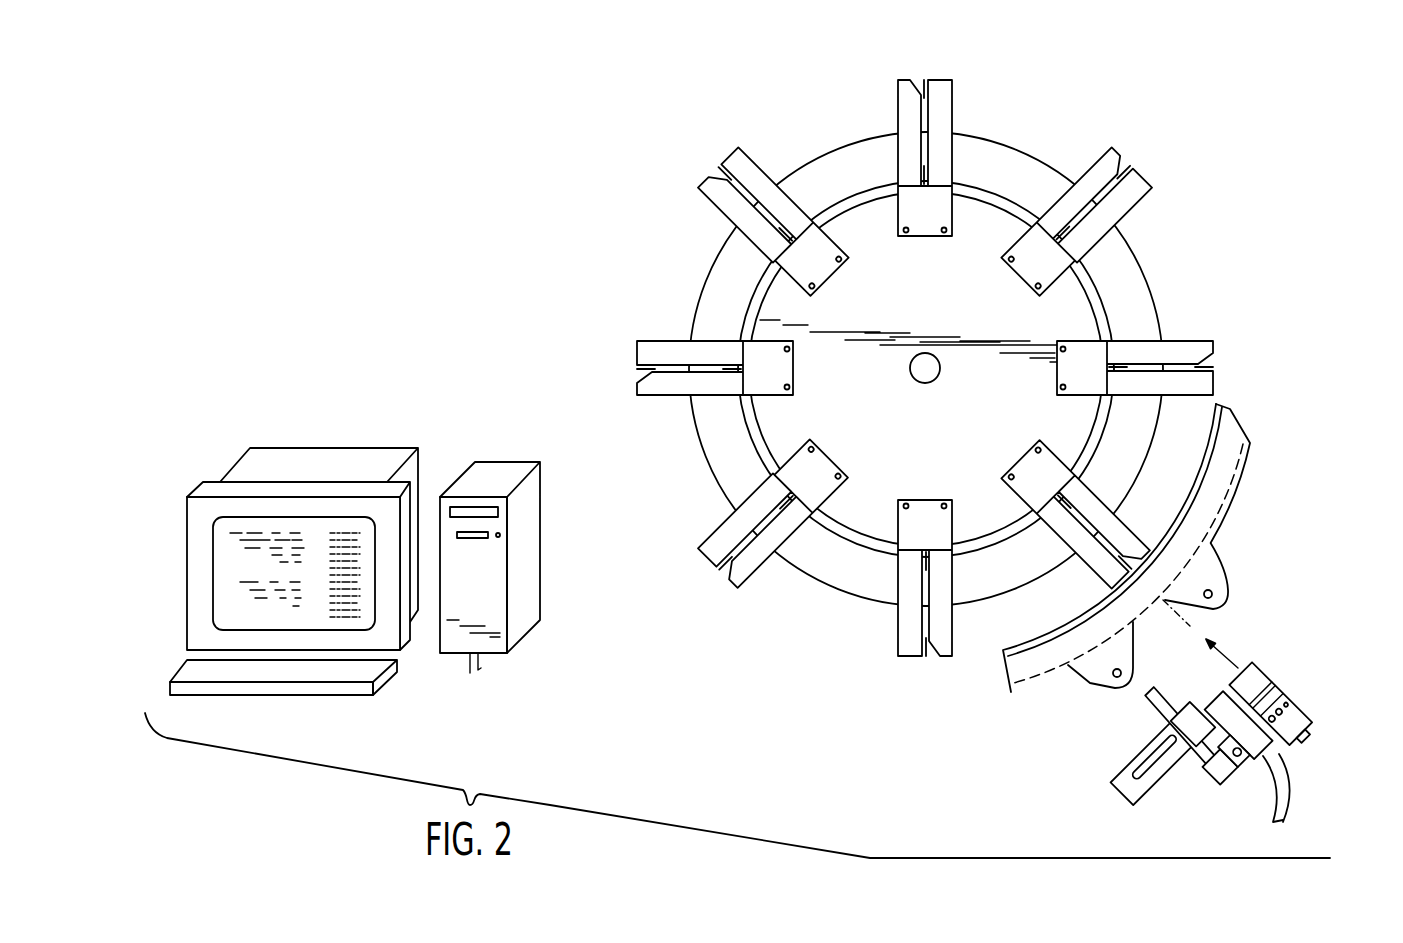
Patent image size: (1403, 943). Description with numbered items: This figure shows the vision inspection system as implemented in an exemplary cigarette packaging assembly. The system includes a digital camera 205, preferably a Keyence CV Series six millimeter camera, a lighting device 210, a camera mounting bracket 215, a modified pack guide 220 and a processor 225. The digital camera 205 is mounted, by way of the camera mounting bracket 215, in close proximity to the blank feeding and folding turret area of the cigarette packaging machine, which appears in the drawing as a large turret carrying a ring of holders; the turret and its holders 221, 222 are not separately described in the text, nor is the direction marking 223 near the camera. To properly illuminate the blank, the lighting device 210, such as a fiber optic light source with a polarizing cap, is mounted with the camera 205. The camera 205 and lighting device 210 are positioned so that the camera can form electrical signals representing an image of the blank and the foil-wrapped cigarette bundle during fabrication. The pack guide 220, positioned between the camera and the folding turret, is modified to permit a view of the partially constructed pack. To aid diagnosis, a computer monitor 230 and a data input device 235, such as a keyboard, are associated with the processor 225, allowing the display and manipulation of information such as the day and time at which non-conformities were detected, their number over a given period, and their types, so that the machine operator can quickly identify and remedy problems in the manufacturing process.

The digital camera 205 is at (1268, 678).
The lighting device 210 is at (1291, 777).
The camera mounting bracket 215 is at (1122, 800).
The modified pack guide 220 is at (1042, 690).
The fixture clamp 221 is at (1163, 341).
The fixture clamp 222 is at (1077, 580).
The direction of travel 223 is at (1195, 630).
The processor 225 is at (523, 462).
The computer monitor 230 is at (349, 448).
The data input device 235 is at (370, 696).